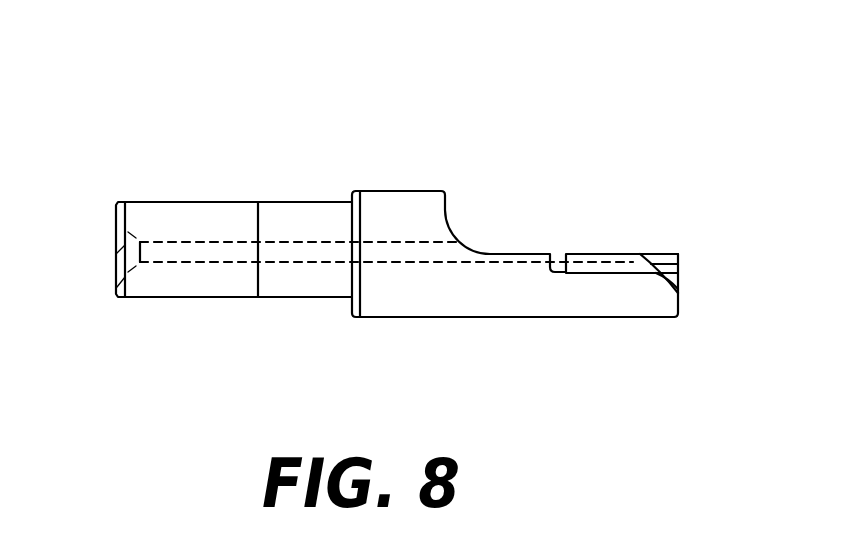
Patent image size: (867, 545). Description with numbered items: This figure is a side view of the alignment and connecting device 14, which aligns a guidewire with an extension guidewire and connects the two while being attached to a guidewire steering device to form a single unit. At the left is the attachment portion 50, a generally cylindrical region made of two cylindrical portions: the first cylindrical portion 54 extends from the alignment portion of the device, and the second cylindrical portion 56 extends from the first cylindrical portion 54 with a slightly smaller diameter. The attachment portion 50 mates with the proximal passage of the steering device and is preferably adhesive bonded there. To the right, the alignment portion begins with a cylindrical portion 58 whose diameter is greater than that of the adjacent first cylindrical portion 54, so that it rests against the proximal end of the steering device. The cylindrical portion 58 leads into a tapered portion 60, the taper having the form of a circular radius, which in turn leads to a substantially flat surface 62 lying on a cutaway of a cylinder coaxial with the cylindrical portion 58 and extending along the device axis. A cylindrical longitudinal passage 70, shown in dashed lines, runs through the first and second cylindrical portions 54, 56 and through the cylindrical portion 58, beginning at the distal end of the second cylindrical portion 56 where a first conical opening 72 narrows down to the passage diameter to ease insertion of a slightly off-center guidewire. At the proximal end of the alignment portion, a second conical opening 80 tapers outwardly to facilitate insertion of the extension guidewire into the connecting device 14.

The alignment and connecting device 14 is at (357, 120).
The attachment portion 50 is at (248, 201).
The first cylindrical portion 54 is at (297, 292).
The second cylindrical portion 56 is at (195, 283).
The cylindrical portion 58 is at (390, 202).
The tapered portion 60 is at (450, 220).
The substantially flat surface 62 is at (597, 254).
The cylindrical longitudinal passage 70 is at (215, 250).
The first conical opening 72 is at (117, 258).
The second conical opening 80 is at (683, 285).